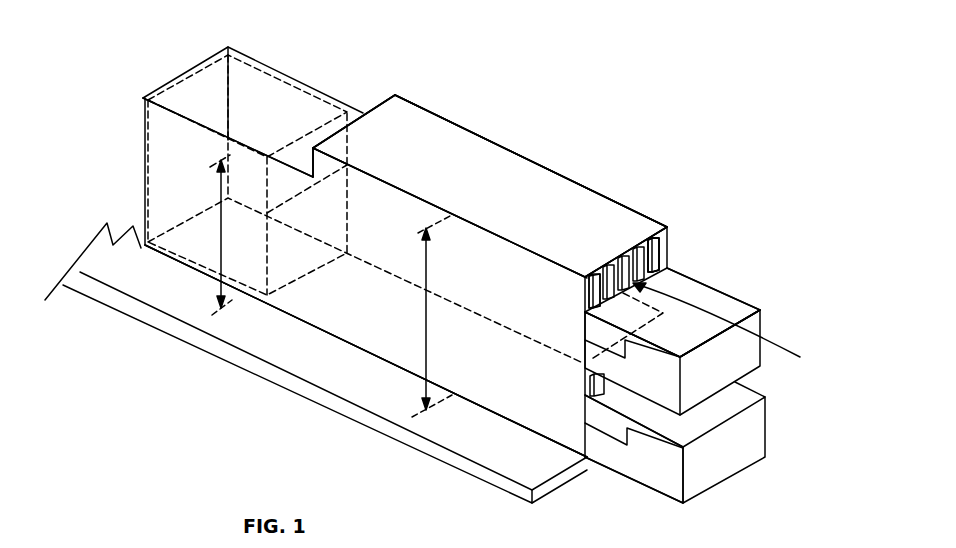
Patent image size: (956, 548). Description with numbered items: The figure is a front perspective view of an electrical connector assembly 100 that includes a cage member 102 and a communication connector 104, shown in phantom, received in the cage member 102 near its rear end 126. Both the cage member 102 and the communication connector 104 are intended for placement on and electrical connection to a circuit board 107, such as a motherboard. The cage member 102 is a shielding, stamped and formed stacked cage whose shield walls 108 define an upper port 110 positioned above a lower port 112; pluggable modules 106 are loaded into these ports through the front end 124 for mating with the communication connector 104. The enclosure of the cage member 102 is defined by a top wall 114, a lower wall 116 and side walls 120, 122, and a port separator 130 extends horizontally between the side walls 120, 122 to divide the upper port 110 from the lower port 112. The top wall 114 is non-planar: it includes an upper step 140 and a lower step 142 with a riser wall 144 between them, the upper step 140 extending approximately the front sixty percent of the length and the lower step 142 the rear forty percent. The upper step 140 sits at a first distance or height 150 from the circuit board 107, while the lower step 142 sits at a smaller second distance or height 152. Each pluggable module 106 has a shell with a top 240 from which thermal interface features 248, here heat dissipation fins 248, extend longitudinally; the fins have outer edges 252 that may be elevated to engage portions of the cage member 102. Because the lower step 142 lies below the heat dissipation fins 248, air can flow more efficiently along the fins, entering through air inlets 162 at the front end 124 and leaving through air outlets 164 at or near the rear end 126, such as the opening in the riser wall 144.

The electrical connector assembly 100 is at (568, 89).
The cage member 102 is at (428, 126).
The communication connector 104 is at (248, 67).
The pluggable module 106 is at (734, 306).
The circuit board 107 is at (110, 278).
The shield wall 108 is at (623, 227).
The upper port 110 is at (700, 290).
The lower port 112 is at (597, 447).
The top wall 114 is at (538, 173).
The lower wall 116 is at (463, 400).
The side wall 120 is at (525, 388).
The side wall 122 is at (668, 250).
The front end 124 is at (668, 246).
The rear end 126 is at (180, 77).
The port separator 130 is at (592, 370).
The upper step 140 is at (485, 152).
The lower step 142 is at (285, 93).
The riser wall 144 is at (313, 169).
The first distance/height 150 is at (425, 292).
The second distance/height 152 is at (252, 300).
The air inlet 162 is at (680, 362).
The air outlet 164 is at (372, 107).
The top 240 is at (730, 300).
The thermal interface feature 248 is at (734, 325).
The outer edge 252 is at (593, 268).